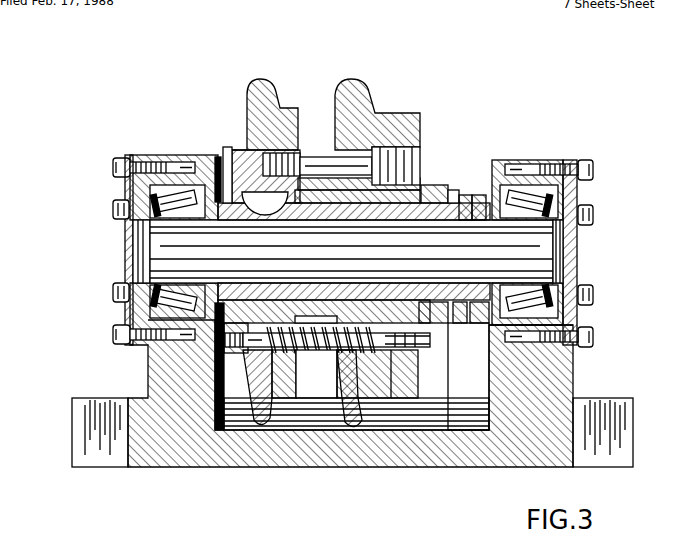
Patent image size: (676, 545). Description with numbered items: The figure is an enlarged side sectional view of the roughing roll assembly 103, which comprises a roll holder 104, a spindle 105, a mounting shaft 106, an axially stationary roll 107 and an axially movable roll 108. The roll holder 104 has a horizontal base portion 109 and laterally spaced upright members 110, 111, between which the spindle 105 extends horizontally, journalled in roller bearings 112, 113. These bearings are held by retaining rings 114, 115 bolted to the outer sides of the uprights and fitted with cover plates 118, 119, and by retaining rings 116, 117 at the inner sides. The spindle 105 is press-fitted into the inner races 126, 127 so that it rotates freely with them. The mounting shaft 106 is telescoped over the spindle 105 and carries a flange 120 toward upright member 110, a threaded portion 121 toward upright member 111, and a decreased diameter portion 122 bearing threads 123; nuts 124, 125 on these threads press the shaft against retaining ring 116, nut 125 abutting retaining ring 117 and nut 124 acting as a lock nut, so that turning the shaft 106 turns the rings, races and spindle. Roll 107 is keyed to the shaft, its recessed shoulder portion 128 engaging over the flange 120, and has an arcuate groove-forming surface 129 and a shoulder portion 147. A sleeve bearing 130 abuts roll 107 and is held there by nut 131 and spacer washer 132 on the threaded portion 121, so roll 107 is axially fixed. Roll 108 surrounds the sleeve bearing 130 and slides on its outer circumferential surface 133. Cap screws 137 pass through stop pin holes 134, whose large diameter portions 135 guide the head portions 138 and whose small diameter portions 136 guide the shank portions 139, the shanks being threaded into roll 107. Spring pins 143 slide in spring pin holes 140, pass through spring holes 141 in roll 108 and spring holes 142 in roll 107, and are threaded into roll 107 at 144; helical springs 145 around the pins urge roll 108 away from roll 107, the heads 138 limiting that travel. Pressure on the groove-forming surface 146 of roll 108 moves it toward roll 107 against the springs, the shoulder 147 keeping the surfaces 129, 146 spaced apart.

The roughing roll assembly 103 is at (185, 146).
The roll holder 104 is at (180, 393).
The spindle 105 is at (180, 247).
The mounting shaft 106 is at (360, 216).
The axially stationary roll 107 is at (257, 100).
The axially movable roll 108 is at (353, 80).
The horizontal base portion 109 is at (163, 447).
The upright member 110 is at (167, 355).
The upright member 111 is at (524, 368).
The roller bearing 112 is at (149, 163).
The roller bearing 113 is at (541, 190).
The retaining ring 114 is at (123, 187).
The retaining ring 115 is at (583, 193).
The retaining ring 116 is at (218, 187).
The retaining ring 117 is at (499, 193).
The cover plate 118 is at (128, 266).
The cover plate 119 is at (581, 257).
The flange 120 is at (228, 160).
The threaded portion 121 is at (431, 323).
The decreased diameter portion 122 is at (453, 310).
The threads 123 is at (466, 310).
The nut 124 is at (466, 197).
The nut 125 is at (479, 198).
The inner race 126 is at (200, 214).
The inner race 127 is at (520, 290).
The recessed shoulder portion 128 is at (245, 350).
The groove-forming surface 129 is at (263, 78).
The sleeve bearing 130 is at (416, 185).
The nut 131 is at (438, 197).
The spacer washer 132 is at (433, 193).
The outer circumferential surface 133 is at (318, 190).
The stop pin hole 134 is at (403, 143).
The large diameter portion 135 is at (419, 197).
The small diameter portion 136 is at (350, 150).
The cap screw 137 is at (298, 153).
The head portion 138 is at (386, 147).
The shank portion 139 is at (322, 152).
The spring pin hole 140 is at (388, 352).
The spring hole 141 is at (338, 350).
The spring hole 142 is at (288, 400).
The spring pin 143 is at (390, 400).
The threaded engagement 144 is at (260, 353).
The helical spring 145 is at (315, 353).
The groove-forming surface 146 is at (359, 80).
The shoulder portion 147 is at (290, 397).